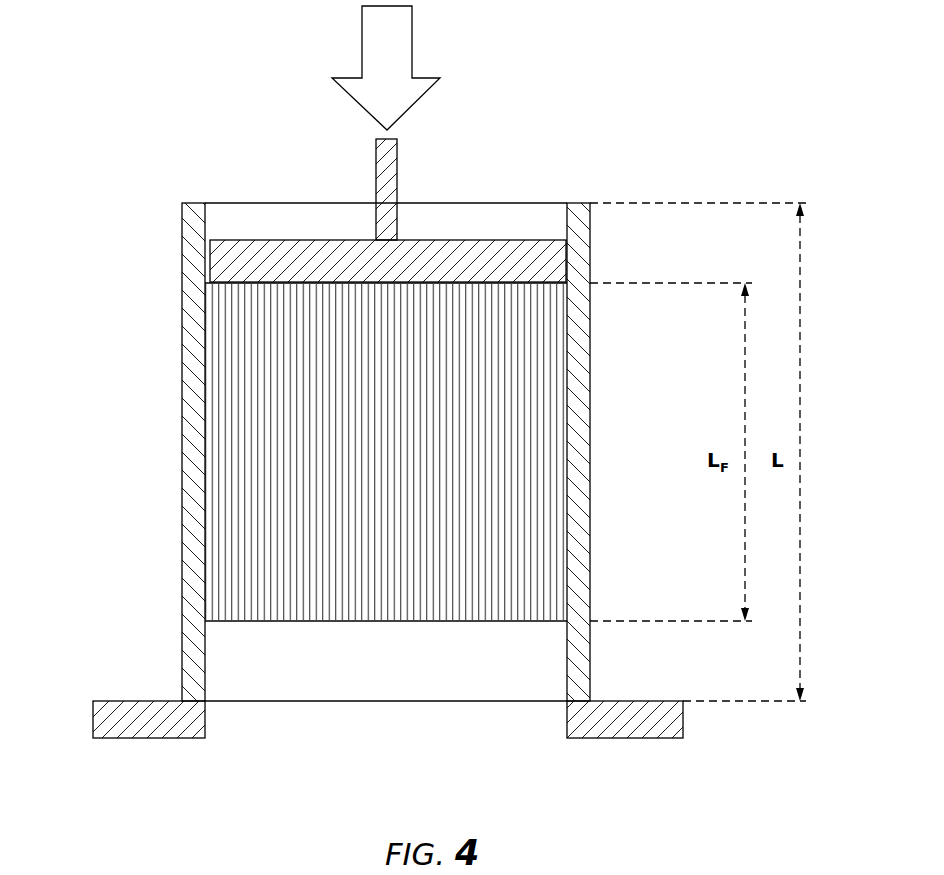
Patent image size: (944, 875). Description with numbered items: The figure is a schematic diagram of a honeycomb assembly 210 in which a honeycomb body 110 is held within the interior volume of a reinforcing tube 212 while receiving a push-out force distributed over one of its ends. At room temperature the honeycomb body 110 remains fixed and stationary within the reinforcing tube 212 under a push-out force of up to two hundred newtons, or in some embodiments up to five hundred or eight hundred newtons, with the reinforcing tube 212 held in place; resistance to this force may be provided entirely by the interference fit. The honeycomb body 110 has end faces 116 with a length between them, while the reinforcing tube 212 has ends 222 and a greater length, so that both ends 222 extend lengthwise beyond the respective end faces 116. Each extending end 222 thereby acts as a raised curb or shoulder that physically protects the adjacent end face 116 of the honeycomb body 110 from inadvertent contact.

The honeycomb assembly 210 is at (114, 170).
The reinforcing tube 212 is at (248, 655).
The ends of the reinforcing tube 222 is at (502, 202).
The end faces 116 is at (498, 285).
The honeycomb body 110 is at (377, 414).